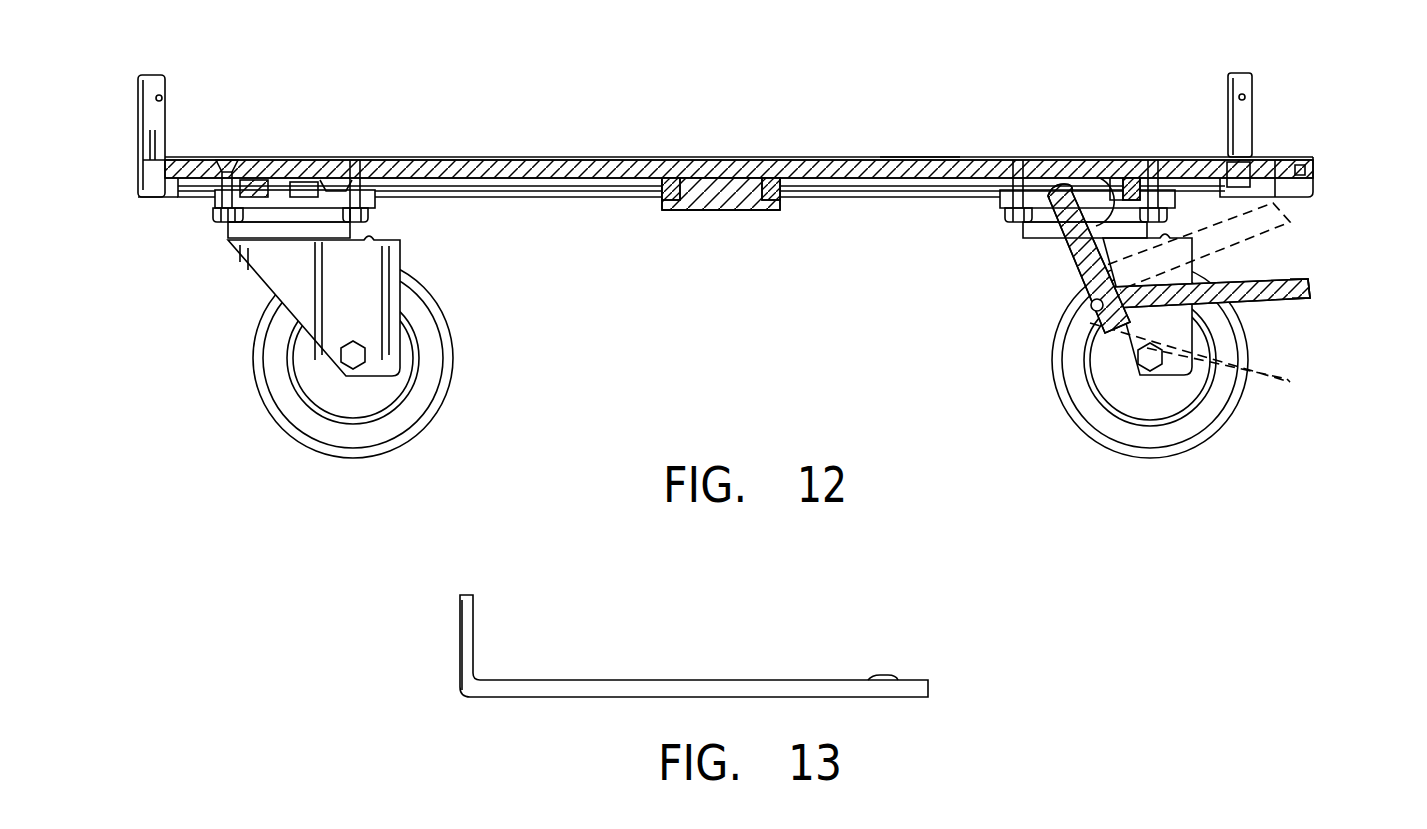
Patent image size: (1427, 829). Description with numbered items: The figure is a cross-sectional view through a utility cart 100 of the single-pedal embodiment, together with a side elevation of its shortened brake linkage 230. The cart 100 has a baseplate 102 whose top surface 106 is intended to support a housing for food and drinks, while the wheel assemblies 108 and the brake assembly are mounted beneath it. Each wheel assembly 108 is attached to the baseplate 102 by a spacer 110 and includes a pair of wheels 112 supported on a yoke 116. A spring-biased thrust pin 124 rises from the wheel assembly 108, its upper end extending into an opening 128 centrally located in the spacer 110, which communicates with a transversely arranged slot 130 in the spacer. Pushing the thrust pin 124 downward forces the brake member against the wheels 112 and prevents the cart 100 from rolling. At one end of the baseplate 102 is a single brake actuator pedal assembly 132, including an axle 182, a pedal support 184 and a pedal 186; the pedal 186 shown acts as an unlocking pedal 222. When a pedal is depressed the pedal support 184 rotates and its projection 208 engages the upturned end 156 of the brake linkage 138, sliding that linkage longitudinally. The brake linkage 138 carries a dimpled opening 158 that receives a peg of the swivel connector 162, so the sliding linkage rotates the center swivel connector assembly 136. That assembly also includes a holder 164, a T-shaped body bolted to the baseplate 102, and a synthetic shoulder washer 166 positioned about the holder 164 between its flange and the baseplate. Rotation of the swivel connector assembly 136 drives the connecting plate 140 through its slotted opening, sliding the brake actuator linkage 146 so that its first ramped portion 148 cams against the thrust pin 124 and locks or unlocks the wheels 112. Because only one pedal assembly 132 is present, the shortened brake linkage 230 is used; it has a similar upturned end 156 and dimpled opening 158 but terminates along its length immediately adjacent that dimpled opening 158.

In FIG. 12, the utility cart 100 is at (197, 277).
In FIG. 12, the baseplate 102 is at (1318, 164).
In FIG. 12, the top surface 106 is at (776, 160).
In FIG. 12, the wheel assembly 108 is at (406, 268).
In FIG. 12, the spacer 110 is at (226, 196).
In FIG. 12, the wheel 112 is at (447, 401).
In FIG. 12, the yoke 116 is at (272, 262).
In FIG. 12, the thrust pin 124 is at (302, 186).
In FIG. 12, the opening 128 is at (272, 186).
In FIG. 12, the slot 130 is at (372, 197).
In FIG. 12, the brake actuator pedal assembly 132 is at (1030, 262).
In FIG. 12, the center swivel connector assembly 136 is at (717, 222).
In FIG. 12, the brake linkage 138 is at (920, 165).
In FIG. 12, the connecting plate 140 is at (870, 196).
In FIG. 12, the brake actuator linkage 146 is at (516, 186).
In FIG. 12, the first ramped portion 148 is at (328, 190).
In FIG. 12, the upturned end 156 is at (1104, 184).
In FIG. 13, the upturned end 156 is at (468, 620).
In FIG. 13, the dimpled opening 158 is at (882, 674).
In FIG. 12, the swivel connector 162 is at (786, 200).
In FIG. 12, the holder 164 is at (706, 192).
In FIG. 12, the shoulder washer 166 is at (672, 186).
In FIG. 12, the axle 182 is at (1110, 320).
In FIG. 12, the pedal support 184 is at (1082, 278).
In FIG. 12, the pedal 186 is at (1302, 302).
In FIG. 12, the projection 208 is at (1060, 196).
In FIG. 12, the unlocking pedal 222 is at (1303, 291).
In FIG. 13, the shortened brake linkage 230 is at (575, 697).